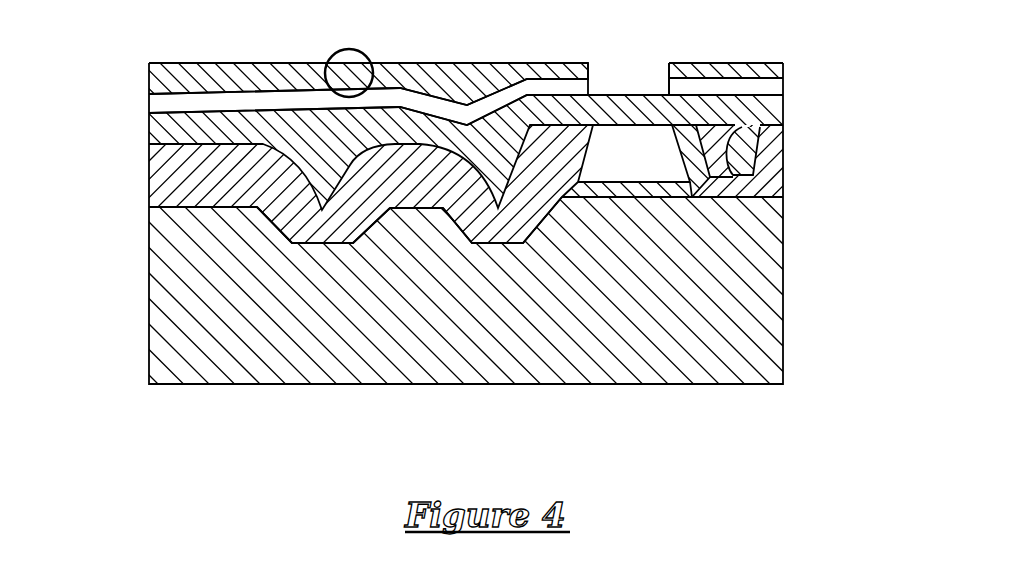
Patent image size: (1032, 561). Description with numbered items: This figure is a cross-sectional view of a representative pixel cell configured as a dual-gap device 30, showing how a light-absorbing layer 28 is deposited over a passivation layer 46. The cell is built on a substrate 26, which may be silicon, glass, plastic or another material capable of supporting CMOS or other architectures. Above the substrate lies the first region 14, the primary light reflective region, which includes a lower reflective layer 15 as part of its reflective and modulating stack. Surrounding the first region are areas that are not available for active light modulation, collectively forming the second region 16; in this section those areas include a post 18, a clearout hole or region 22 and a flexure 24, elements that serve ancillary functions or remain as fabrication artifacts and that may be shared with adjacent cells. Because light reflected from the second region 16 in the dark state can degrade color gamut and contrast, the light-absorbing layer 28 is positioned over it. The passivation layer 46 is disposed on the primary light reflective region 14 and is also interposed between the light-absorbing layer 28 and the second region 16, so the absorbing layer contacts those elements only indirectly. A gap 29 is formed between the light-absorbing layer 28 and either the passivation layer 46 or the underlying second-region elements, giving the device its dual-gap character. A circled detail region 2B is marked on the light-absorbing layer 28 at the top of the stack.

The first region 14 is at (655, 167).
The lower reflective layer 15 is at (630, 188).
The second region 16 is at (140, 175).
The post 18 is at (500, 172).
The clearout hole or region 22 is at (313, 180).
The flexure 24 is at (760, 126).
The substrate 26 is at (488, 340).
The light-absorbing layer 28 is at (177, 77).
The gap 29 is at (167, 103).
The dual-gap device 30 is at (122, 334).
The passivation layer 46 is at (784, 97).
The detail view circle 2B is at (366, 56).